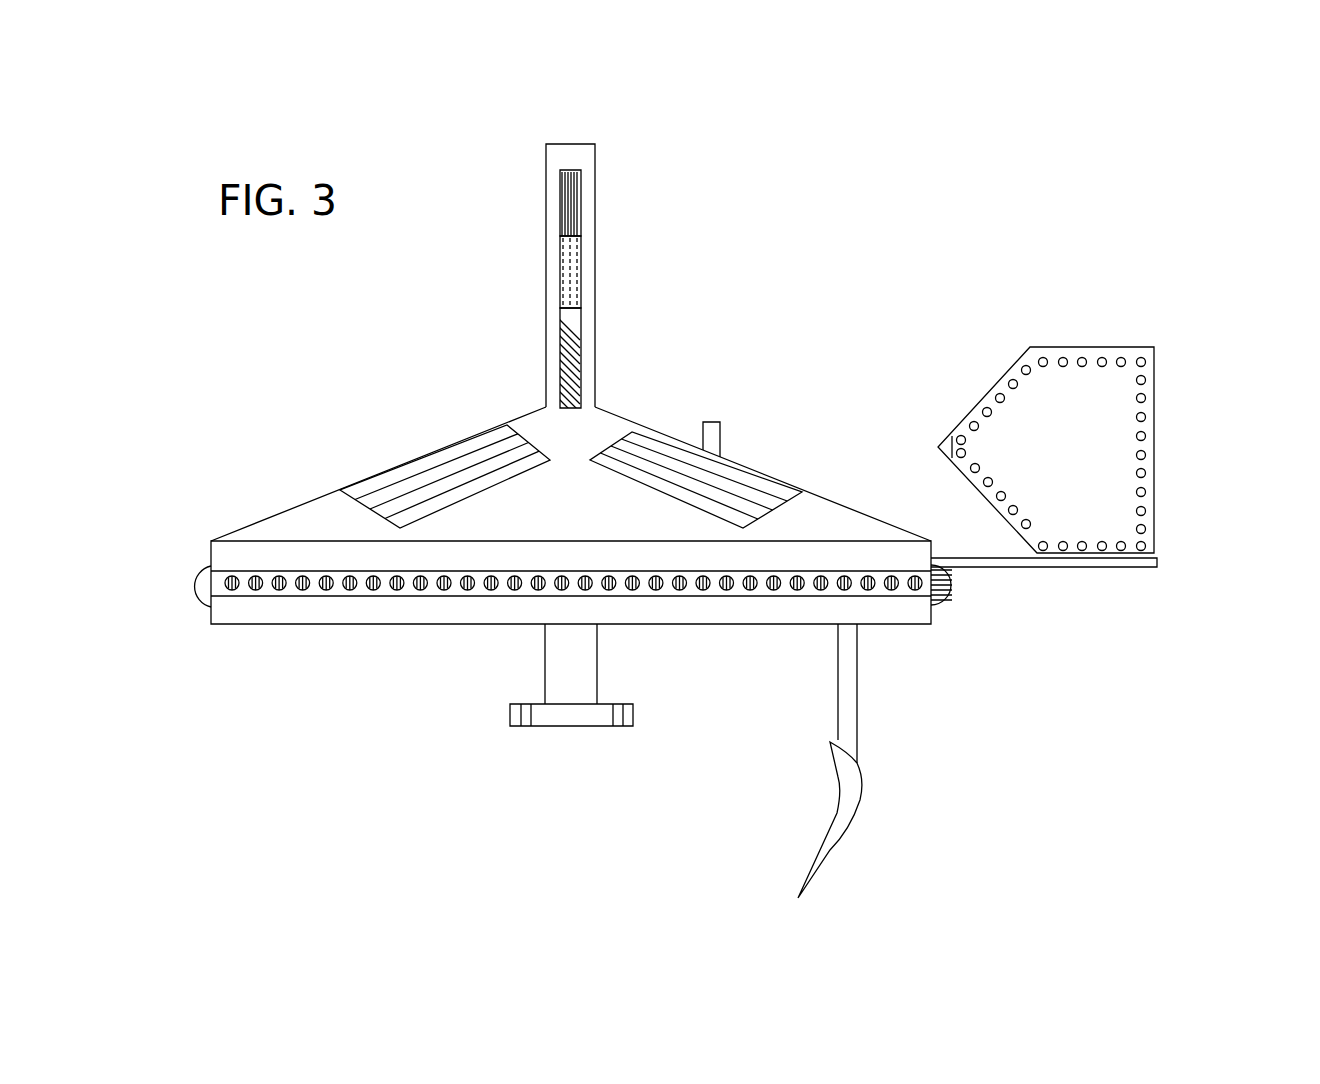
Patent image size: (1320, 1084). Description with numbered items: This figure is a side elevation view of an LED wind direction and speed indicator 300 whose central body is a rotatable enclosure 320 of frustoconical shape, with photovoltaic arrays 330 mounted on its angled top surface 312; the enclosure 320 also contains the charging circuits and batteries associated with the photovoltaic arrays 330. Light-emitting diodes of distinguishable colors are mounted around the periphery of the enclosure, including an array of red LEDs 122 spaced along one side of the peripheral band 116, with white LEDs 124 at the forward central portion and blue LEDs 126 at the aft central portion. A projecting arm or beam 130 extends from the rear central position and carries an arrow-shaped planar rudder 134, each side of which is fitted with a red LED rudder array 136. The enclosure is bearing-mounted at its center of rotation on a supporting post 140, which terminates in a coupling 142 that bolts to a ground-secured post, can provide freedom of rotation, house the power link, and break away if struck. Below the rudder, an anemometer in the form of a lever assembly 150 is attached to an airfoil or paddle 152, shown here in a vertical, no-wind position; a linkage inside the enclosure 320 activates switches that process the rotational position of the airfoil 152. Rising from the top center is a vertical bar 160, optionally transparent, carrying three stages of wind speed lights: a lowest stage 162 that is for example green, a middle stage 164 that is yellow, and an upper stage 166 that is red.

The LED wind direction and speed indicator 300 is at (815, 148).
The housing 116 is at (214, 554).
The red LEDs 122 is at (300, 592).
The white LEDs 124 is at (193, 598).
The blue LEDs 126 is at (948, 612).
The projecting arm or beam 130 is at (1023, 571).
The rudder 134 is at (1078, 345).
The red LED rudder array 136 is at (1148, 431).
The supporting post 140 is at (539, 665).
The coupling 142 is at (508, 716).
The lever assembly 150 is at (861, 697).
The airfoil or paddle 152 is at (839, 849).
The vertical bar 160 is at (598, 143).
The lowest stage of lights 162 is at (582, 368).
The middle stage of lights 164 is at (582, 291).
The upper stage of lights 166 is at (582, 206).
The angled top surface 312 is at (626, 503).
The rotatable enclosure 320 is at (301, 506).
The photovoltaic arrays 330 is at (622, 456).